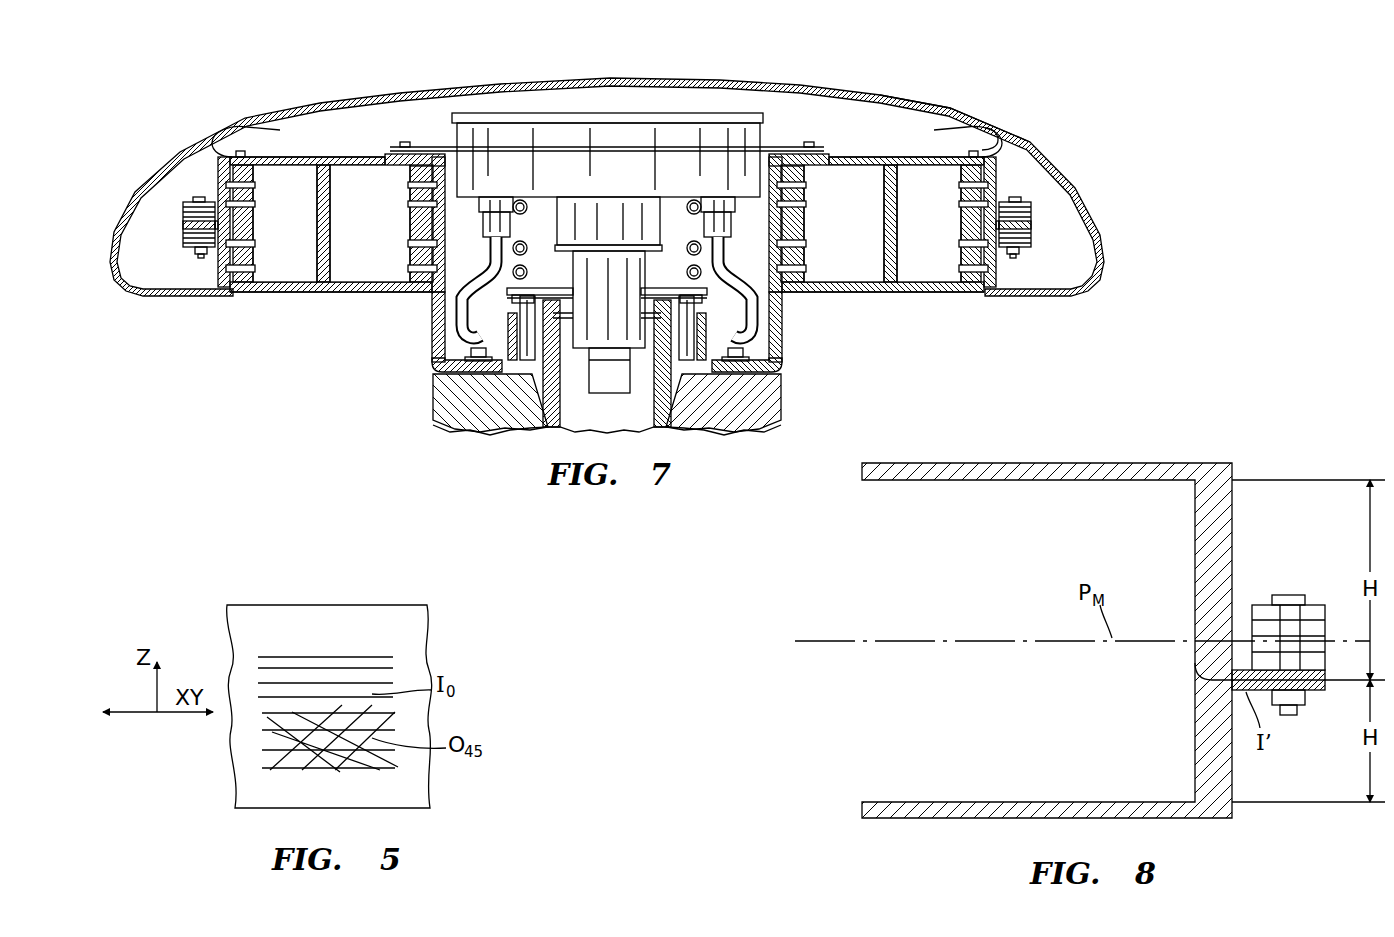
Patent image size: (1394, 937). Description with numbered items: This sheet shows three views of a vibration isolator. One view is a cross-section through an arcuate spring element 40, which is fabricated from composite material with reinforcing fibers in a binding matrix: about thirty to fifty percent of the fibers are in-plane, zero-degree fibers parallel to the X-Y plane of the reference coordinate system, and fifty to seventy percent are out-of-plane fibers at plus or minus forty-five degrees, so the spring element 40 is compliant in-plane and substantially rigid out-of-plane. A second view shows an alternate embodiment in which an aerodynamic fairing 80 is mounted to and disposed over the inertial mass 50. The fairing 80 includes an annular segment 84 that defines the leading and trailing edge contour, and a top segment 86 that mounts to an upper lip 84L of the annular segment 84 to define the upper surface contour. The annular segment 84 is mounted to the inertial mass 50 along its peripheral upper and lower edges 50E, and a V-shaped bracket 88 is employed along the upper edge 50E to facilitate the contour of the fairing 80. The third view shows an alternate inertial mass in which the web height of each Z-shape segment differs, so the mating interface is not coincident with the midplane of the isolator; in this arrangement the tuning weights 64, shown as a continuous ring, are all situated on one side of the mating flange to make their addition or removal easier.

In FIG. 5, the arcuate spring element 40 is at (357, 618).
In FIG. 7, the inertial mass 50 is at (216, 256).
In FIG. 7, the peripheral upper and lower edges 50E is at (241, 156).
In FIG. 8, the tuning weight 64 is at (1323, 607).
In FIG. 7, the fairing 80 is at (607, 158).
In FIG. 7, the annular segment 84 is at (1064, 152).
In FIG. 7, the upper lip 84L is at (990, 134).
In FIG. 7, the top segment 86 is at (963, 120).
In FIG. 7, the V-shaped bracket 88 is at (215, 148).